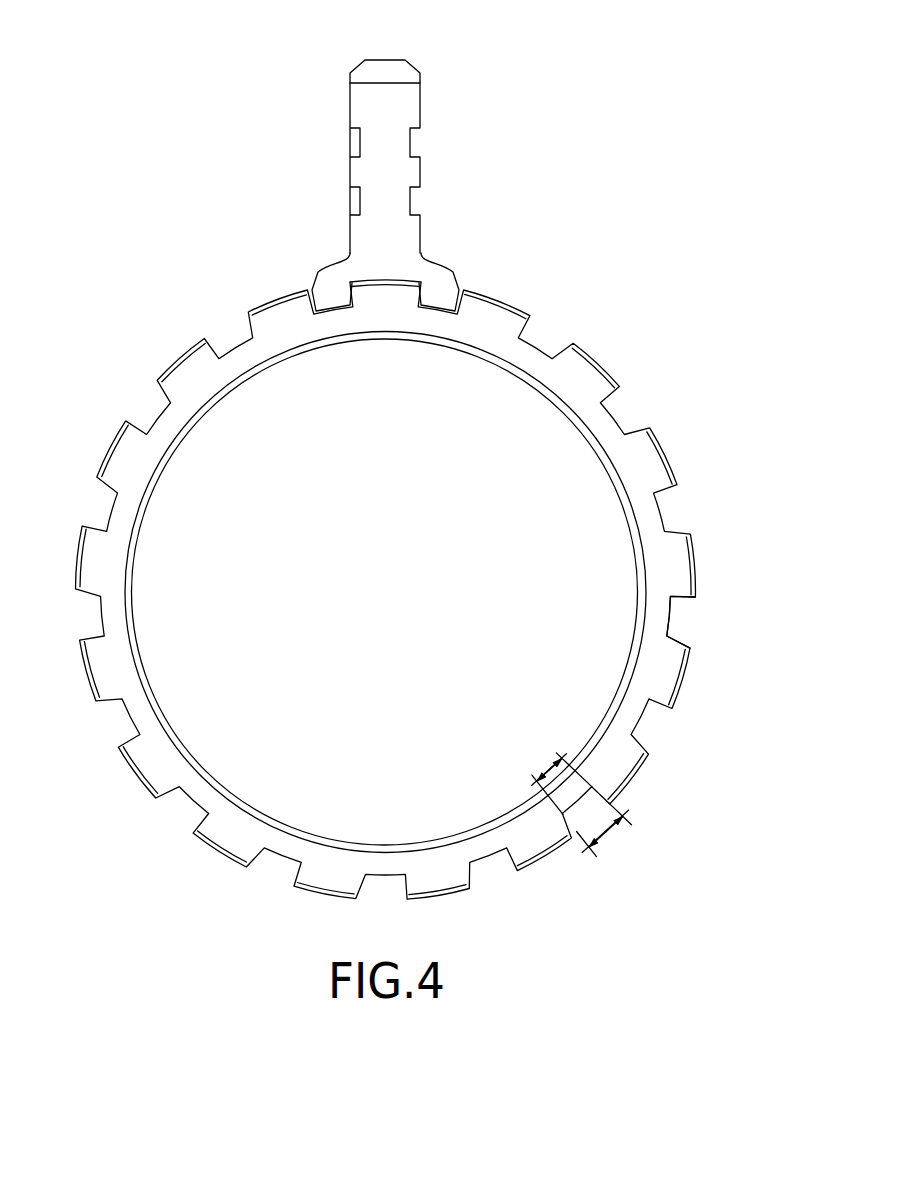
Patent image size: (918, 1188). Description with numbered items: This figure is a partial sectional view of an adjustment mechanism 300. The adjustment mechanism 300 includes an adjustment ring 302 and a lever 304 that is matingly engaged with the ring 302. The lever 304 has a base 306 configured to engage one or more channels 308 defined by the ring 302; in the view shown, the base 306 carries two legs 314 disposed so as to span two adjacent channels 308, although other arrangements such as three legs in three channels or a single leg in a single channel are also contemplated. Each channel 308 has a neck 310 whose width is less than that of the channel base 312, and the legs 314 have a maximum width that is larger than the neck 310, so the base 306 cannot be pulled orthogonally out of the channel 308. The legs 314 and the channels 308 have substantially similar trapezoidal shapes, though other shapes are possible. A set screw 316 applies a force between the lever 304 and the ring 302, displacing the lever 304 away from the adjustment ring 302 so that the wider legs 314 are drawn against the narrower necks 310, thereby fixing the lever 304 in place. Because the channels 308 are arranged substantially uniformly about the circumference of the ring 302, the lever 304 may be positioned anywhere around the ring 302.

The adjustment mechanism 300 is at (659, 139).
The adjustment ring 302 is at (641, 469).
The lever 304 is at (399, 57).
The base 306 is at (393, 247).
The channel 308 is at (706, 620).
The neck 310 is at (611, 839).
The channel base 312 is at (547, 768).
The leg 314 is at (441, 293).
The set screw 316 is at (380, 281).